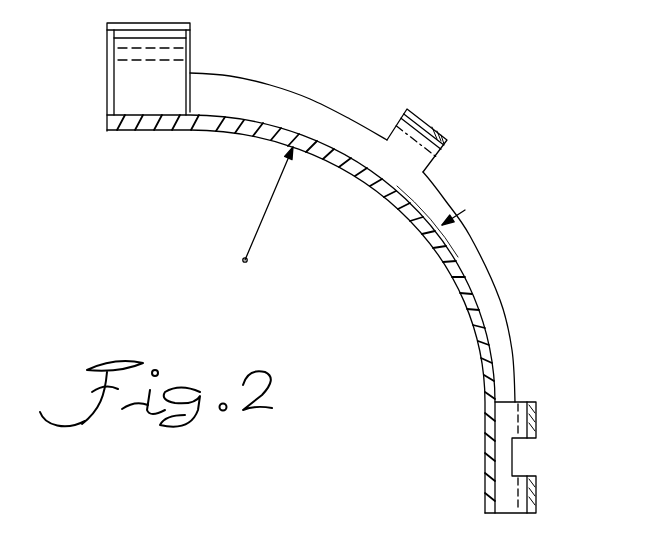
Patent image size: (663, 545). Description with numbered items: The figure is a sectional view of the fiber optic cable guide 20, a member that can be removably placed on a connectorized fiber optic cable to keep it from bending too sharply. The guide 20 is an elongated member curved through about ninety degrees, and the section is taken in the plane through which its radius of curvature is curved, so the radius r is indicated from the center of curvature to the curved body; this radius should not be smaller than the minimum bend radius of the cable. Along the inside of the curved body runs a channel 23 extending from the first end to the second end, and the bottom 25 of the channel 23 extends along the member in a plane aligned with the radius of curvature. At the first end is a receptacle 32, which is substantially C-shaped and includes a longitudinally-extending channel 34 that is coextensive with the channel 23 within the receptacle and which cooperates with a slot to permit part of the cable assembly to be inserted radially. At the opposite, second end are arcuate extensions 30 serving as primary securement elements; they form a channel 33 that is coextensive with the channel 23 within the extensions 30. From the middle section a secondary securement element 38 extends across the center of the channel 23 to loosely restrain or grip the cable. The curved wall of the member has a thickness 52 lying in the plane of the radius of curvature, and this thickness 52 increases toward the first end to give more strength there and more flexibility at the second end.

The fiber optic cable guide 20 is at (325, 268).
The channel 23 is at (283, 107).
The bottom of channel 25 is at (336, 152).
The extension 30 is at (540, 422).
The receptacle 32 is at (107, 71).
The channel 33 is at (510, 422).
The longitudinally-extending channel 34 is at (134, 85).
The secondary securement element 38 is at (430, 118).
The thickness 52 is at (421, 240).